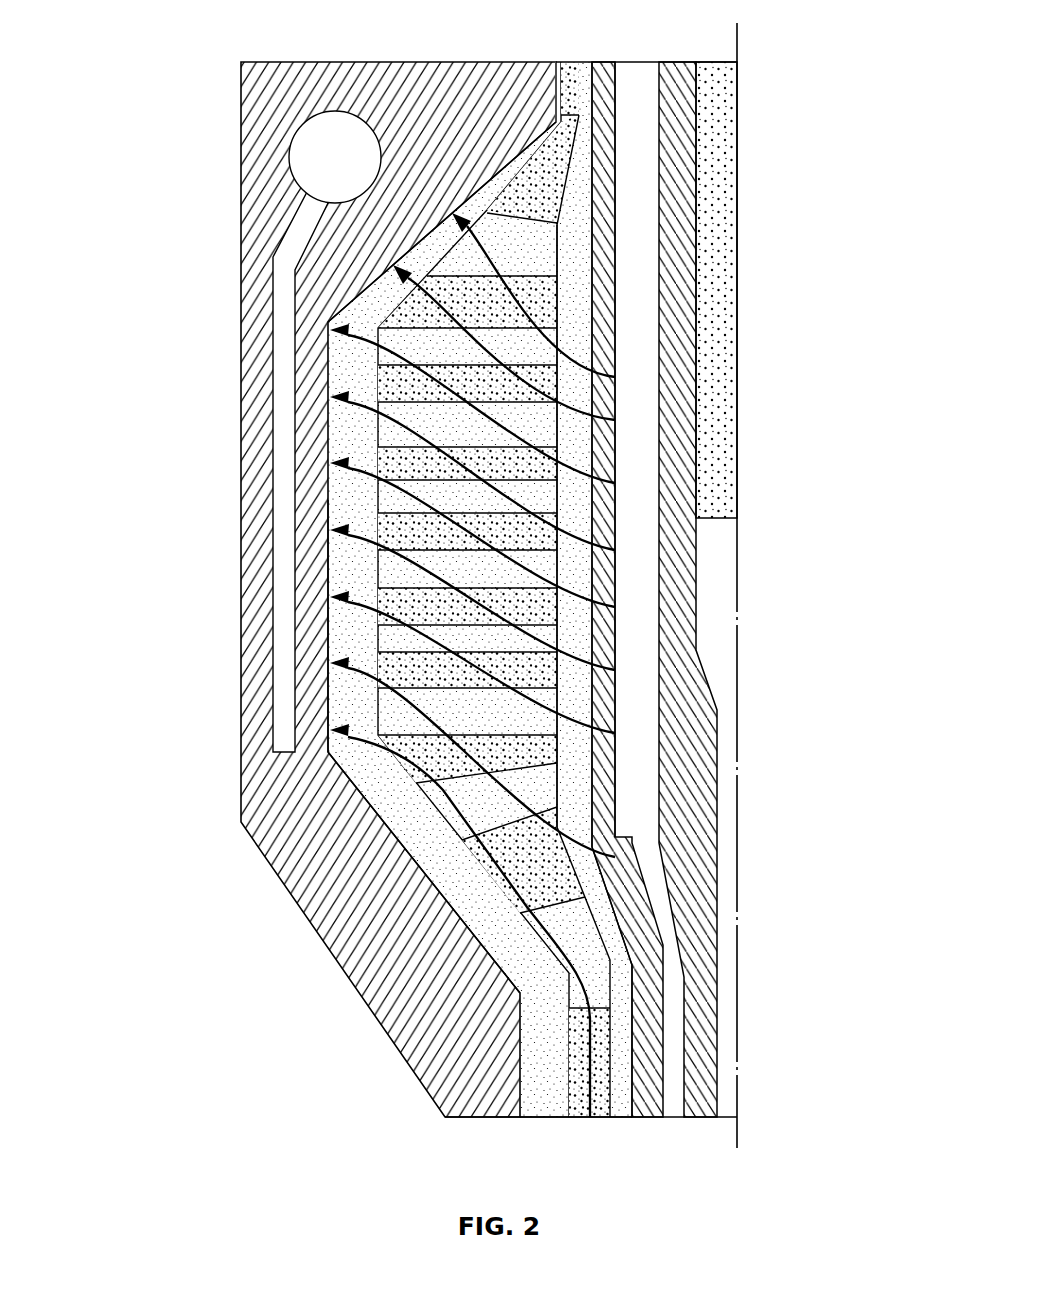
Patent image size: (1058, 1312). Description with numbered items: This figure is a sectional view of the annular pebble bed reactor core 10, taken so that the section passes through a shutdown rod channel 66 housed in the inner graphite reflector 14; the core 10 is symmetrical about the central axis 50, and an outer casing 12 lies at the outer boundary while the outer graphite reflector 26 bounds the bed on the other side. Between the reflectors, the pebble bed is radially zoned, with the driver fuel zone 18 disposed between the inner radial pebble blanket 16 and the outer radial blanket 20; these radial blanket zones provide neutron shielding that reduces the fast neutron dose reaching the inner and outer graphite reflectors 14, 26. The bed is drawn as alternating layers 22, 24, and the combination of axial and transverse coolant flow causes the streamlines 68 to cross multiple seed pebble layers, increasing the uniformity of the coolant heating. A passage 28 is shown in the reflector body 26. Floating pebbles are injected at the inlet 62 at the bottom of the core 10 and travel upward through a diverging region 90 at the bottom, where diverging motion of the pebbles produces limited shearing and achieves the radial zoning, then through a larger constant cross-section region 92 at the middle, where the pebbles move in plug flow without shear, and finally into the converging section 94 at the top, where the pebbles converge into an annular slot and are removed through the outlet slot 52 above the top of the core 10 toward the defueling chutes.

The core 10 is at (150, 55).
The outer casing 12 is at (723, 123).
The inner graphite reflector 14 is at (680, 257).
The inner radial pebble blanket 16 is at (580, 392).
The driver fuel zone 18 is at (547, 432).
The outer radial blanket 20 is at (345, 668).
The first layer 22 is at (529, 671).
The second layer 24 is at (494, 589).
The outer graphite reflector 26 is at (408, 1045).
The passage 28 is at (325, 152).
The axis 50 is at (733, 1137).
The outlet slot 52 is at (551, 53).
The inlet 62 is at (519, 1137).
The shutdown rod channel 66 is at (642, 803).
The streamlines 68 is at (362, 468).
The diverging region 90 is at (433, 885).
The constant cross-section region 92 is at (345, 735).
The converging section 94 is at (372, 297).